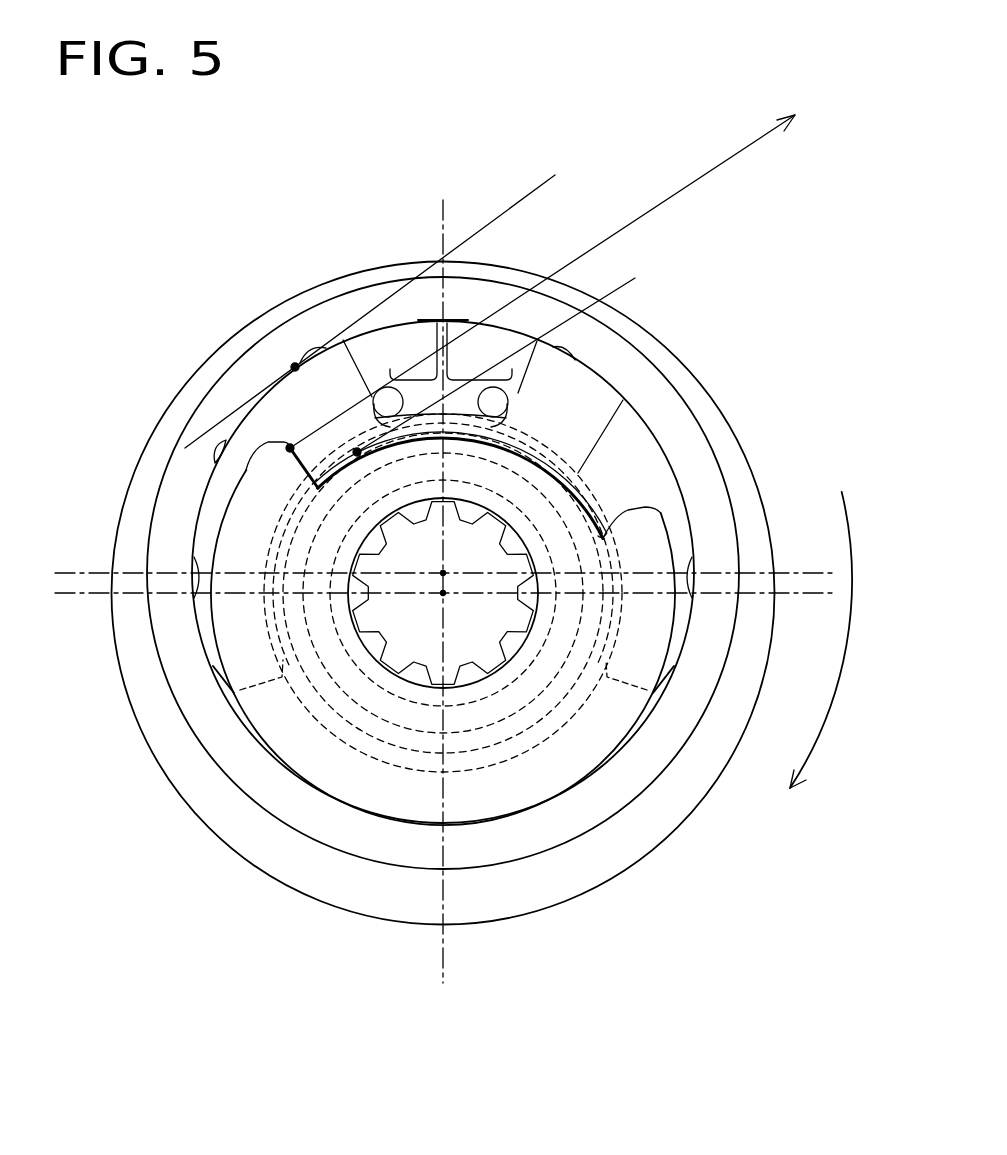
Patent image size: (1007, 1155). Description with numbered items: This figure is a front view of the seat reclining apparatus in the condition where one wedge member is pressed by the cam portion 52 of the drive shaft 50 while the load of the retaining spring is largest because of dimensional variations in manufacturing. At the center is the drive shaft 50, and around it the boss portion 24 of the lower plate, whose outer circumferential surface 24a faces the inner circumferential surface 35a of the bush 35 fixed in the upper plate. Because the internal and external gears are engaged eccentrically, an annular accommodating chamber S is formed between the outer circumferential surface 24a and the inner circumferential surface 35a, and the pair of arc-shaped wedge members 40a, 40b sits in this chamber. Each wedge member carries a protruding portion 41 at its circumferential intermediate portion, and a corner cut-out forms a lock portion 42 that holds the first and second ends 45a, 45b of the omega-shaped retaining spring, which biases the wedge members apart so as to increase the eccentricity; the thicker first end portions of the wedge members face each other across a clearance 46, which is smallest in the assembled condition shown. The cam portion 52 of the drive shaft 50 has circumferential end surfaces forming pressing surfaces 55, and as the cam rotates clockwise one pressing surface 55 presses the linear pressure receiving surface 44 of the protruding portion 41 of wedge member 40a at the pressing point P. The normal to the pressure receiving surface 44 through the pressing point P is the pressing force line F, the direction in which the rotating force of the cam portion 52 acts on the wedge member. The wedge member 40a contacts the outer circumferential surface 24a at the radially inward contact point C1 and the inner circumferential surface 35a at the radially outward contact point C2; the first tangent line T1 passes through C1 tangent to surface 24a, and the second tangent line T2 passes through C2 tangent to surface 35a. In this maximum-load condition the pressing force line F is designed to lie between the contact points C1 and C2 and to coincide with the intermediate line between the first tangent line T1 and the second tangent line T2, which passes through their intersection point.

The boss portion 24 is at (380, 741).
The outer circumferential surface of the boss portion 24a is at (486, 750).
The bush 35 is at (488, 852).
The inner circumferential surface of the bush 35a is at (537, 797).
The wedge member 40a is at (203, 533).
The wedge member 40b is at (700, 510).
The protruding portion 41 is at (245, 408).
The lock portion 42 is at (386, 400).
The pressure receiving surface 44 is at (252, 430).
The first end of the retaining spring 45a is at (370, 410).
The second end of the retaining spring 45b is at (515, 392).
The clearance 46 is at (447, 320).
The drive shaft 50 is at (494, 637).
The cam portion 52 is at (263, 470).
The pressing surface 55 is at (300, 462).
The accommodating chamber S is at (235, 703).
The pressing point P is at (290, 447).
The radially inward contact point C1 is at (357, 453).
The radially outward contact point C2 is at (295, 363).
The first tangent line T1 is at (619, 292).
The second tangent line T2 is at (512, 205).
The pressing force line F is at (575, 432).